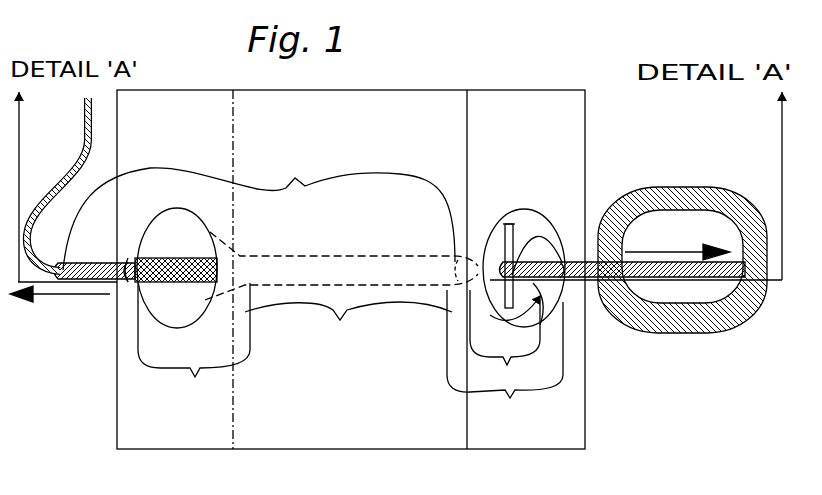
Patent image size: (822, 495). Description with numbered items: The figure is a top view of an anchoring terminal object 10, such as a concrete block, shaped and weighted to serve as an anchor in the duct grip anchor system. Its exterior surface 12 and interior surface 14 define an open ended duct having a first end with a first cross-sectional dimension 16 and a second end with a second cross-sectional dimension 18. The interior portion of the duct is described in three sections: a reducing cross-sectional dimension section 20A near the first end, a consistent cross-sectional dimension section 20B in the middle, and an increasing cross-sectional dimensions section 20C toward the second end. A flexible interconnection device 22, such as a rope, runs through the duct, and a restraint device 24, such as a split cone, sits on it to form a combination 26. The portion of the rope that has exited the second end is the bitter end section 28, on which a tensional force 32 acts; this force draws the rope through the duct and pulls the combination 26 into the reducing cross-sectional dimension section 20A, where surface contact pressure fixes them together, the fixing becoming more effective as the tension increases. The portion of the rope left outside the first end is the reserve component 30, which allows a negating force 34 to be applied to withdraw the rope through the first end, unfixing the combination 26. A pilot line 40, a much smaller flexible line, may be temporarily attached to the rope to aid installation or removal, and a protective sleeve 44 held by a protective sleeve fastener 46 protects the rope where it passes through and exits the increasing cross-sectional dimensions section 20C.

The anchoring terminal object 10 is at (373, 129).
The exterior surface 12 is at (482, 86).
The interior surface 14 is at (180, 309).
The first cross-sectional dimension 16 is at (568, 290).
The second cross-sectional dimension 18 is at (133, 296).
The reducing cross-sectional dimension section 20A is at (505, 359).
The consistent cross-sectional dimension section 20B is at (341, 292).
The increasing cross-sectional dimensions section 20C is at (194, 345).
The flexible interconnection device 22 is at (97, 261).
The restraint device 24 is at (496, 292).
The combination 26 is at (505, 340).
The bitter end section 28 is at (259, 208).
The reserve component 30 is at (770, 242).
The tensional force 32 is at (89, 300).
The negating force 34 is at (650, 248).
The pilot line 40 is at (84, 142).
The protective sleeve 44 is at (172, 256).
The protective sleeve fastener 46 is at (130, 257).